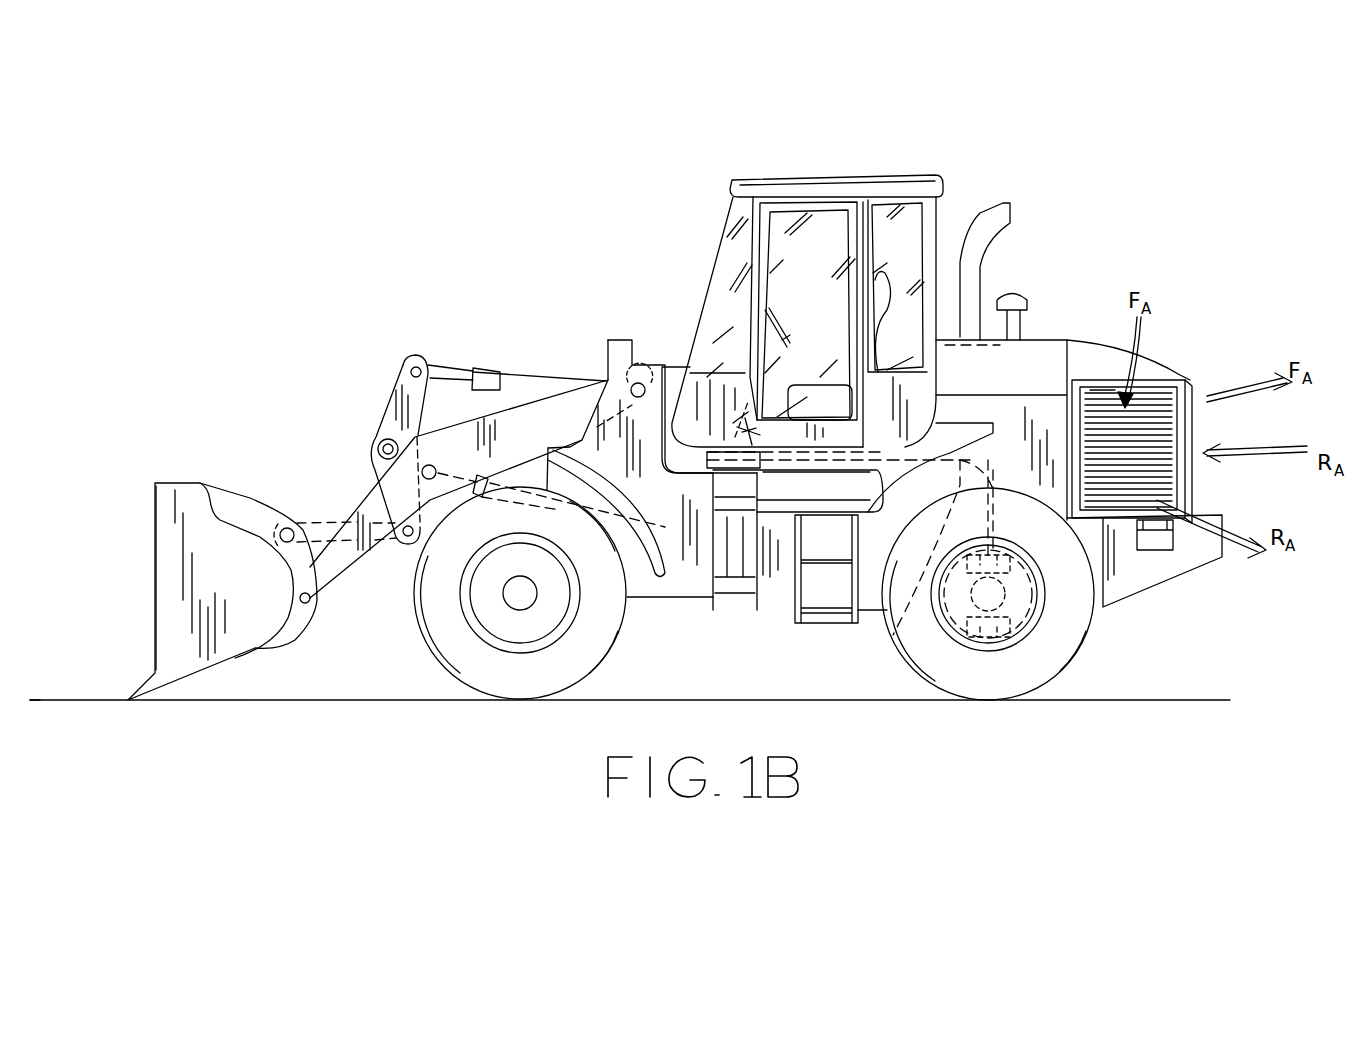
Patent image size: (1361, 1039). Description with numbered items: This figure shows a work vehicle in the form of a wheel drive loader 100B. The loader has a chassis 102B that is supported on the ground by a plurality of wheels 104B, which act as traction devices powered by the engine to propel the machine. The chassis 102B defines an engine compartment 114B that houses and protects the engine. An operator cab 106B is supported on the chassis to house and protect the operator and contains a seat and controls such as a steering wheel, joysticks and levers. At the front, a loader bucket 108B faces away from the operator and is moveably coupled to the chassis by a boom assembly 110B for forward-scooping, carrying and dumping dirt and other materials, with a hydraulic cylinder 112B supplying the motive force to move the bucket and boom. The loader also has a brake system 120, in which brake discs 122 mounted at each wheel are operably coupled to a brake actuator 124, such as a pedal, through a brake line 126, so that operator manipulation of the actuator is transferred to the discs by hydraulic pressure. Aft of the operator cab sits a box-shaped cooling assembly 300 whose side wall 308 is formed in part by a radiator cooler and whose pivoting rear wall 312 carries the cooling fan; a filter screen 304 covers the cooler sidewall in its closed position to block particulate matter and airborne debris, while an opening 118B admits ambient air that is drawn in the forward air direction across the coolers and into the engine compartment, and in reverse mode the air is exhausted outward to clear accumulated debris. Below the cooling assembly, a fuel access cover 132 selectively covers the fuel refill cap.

The loader 100B is at (452, 128).
The chassis 102B is at (660, 593).
The wheels 104B is at (513, 687).
The operator cab 106B is at (808, 216).
The loader bucket 108B is at (187, 487).
The boom assembly 110B is at (367, 503).
The hydraulic cylinder 112B is at (492, 483).
The engine compartment 114B is at (1013, 398).
The opening 118B is at (1100, 408).
The brake system 120 is at (822, 486).
The brake discs 122 is at (1017, 608).
The brake actuator 124 is at (755, 403).
The brake line 126 is at (893, 633).
The fuel access cover 132 is at (1147, 540).
The cooling assembly 300 is at (1182, 305).
The filter screen 304 is at (1167, 493).
The side wall 308 is at (1140, 373).
The pivoting rear wall 312 is at (1195, 435).